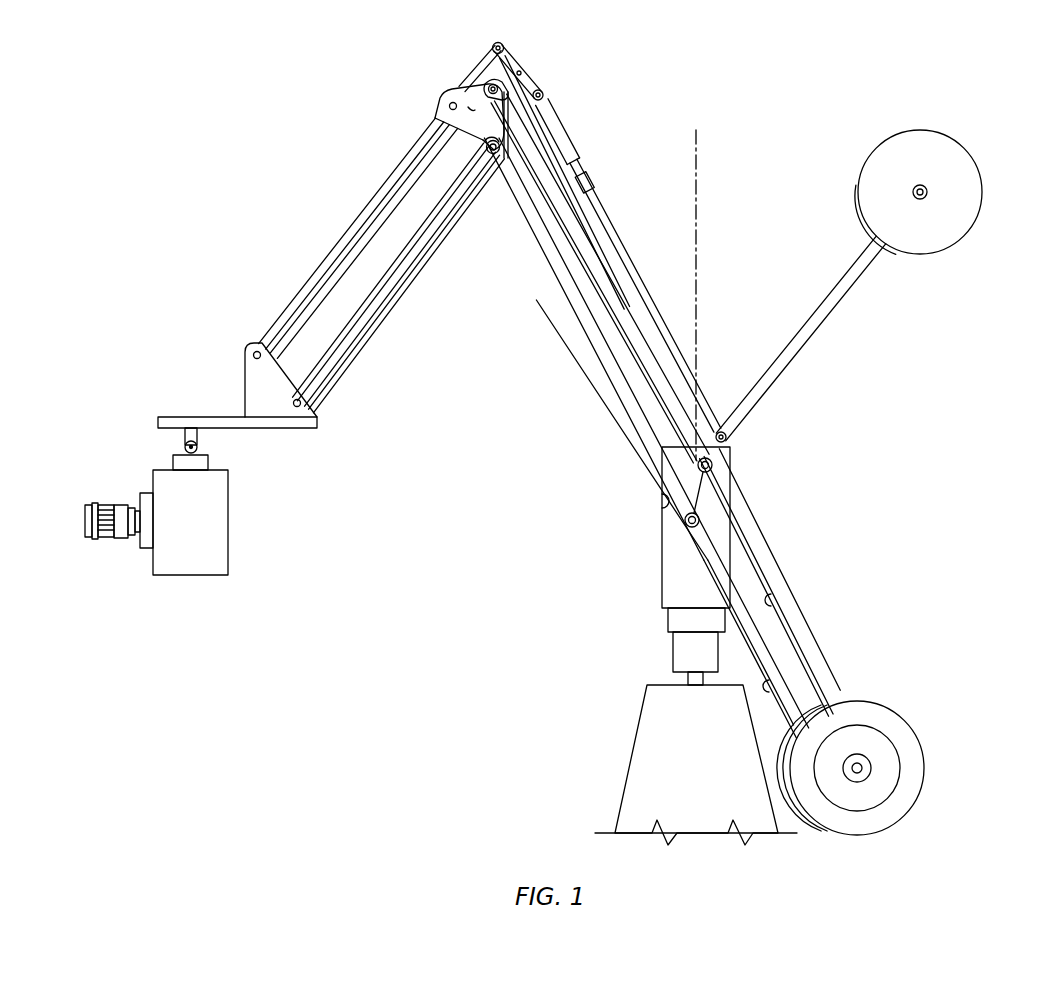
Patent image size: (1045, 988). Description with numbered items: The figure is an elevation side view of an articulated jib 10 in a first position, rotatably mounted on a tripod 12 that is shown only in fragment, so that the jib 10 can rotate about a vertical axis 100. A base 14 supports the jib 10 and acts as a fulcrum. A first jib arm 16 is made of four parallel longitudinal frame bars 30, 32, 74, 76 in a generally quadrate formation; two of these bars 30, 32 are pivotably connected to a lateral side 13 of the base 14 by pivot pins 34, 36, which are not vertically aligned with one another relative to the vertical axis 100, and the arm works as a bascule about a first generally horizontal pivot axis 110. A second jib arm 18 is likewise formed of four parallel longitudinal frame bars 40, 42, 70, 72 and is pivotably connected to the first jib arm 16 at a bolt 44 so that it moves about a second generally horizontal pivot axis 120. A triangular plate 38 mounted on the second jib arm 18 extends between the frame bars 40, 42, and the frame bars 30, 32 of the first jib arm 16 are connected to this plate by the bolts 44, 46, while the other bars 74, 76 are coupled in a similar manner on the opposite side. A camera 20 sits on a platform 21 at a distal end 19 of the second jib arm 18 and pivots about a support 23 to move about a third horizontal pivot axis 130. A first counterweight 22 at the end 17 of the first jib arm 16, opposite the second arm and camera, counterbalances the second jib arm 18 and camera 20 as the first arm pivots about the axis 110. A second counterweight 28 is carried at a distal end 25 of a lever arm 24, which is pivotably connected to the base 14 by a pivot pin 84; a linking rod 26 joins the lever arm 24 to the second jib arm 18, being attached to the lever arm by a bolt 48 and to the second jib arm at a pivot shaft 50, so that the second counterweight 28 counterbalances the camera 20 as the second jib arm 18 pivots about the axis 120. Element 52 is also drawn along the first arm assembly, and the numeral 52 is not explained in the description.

The articulated jib 10 is at (236, 73).
The tripod 12 is at (632, 763).
The lateral side 13 is at (680, 553).
The base 14 is at (662, 592).
The first jib arm 16 is at (602, 385).
The end 17 is at (840, 700).
The second jib arm 18 is at (382, 265).
The distal end 19 is at (322, 416).
The camera 20 is at (193, 562).
The platform 21 is at (188, 417).
The first counterweight 22 is at (918, 772).
The support 23 is at (186, 447).
The lever arm 24 is at (810, 338).
The distal end 25 is at (878, 258).
The linking rod 26 is at (593, 183).
The second counterweight 28 is at (960, 190).
The longitudinal frame bar 30 is at (764, 650).
The longitudinal frame bar 32 is at (765, 565).
The pivot pin 34 is at (700, 519).
The pivot pin 36 is at (713, 463).
The triangular plate 38 is at (463, 97).
The longitudinal frame bar 40 is at (360, 318).
The longitudinal frame bar 42 is at (350, 233).
The bolt 44 is at (507, 135).
The bolt 46 is at (487, 62).
The bolt 48 is at (722, 431).
The pivot shaft 50 is at (522, 72).
The parallel link 52 is at (604, 323).
The longitudinal frame bar 70 is at (340, 368).
The longitudinal frame bar 72 is at (337, 272).
The longitudinal frame bar 74 is at (774, 690).
The longitudinal frame bar 76 is at (777, 598).
The pivot pin 84 is at (666, 500).
The vertical axis 100 is at (698, 150).
The first horizontal pivot axis 110 is at (700, 494).
The second horizontal pivot axis 120 is at (457, 137).
The third horizontal pivot axis 130 is at (197, 447).